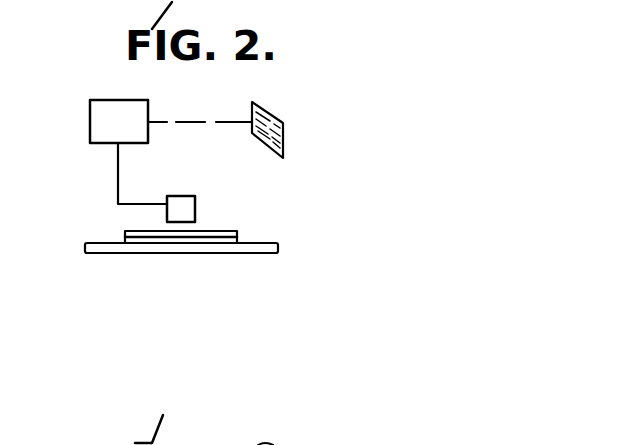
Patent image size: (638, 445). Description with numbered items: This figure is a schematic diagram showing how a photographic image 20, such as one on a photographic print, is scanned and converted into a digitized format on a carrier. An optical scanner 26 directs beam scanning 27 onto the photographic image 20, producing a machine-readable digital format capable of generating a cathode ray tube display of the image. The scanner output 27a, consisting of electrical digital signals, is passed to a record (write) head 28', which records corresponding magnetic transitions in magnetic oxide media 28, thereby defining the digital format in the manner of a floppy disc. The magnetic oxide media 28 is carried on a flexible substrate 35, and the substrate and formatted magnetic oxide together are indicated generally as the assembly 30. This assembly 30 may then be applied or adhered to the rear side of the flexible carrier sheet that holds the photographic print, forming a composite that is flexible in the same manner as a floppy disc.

The photographic image 20 is at (270, 118).
The optical scanner 26 is at (110, 110).
The beam scanning 27 is at (204, 124).
The scanner output 27a is at (117, 165).
The magnetic oxide media 28 is at (137, 214).
The record (write) head 28' is at (197, 182).
The substrate and formatted magnetic oxide 30 is at (250, 230).
The flexible substrate 35 is at (136, 238).